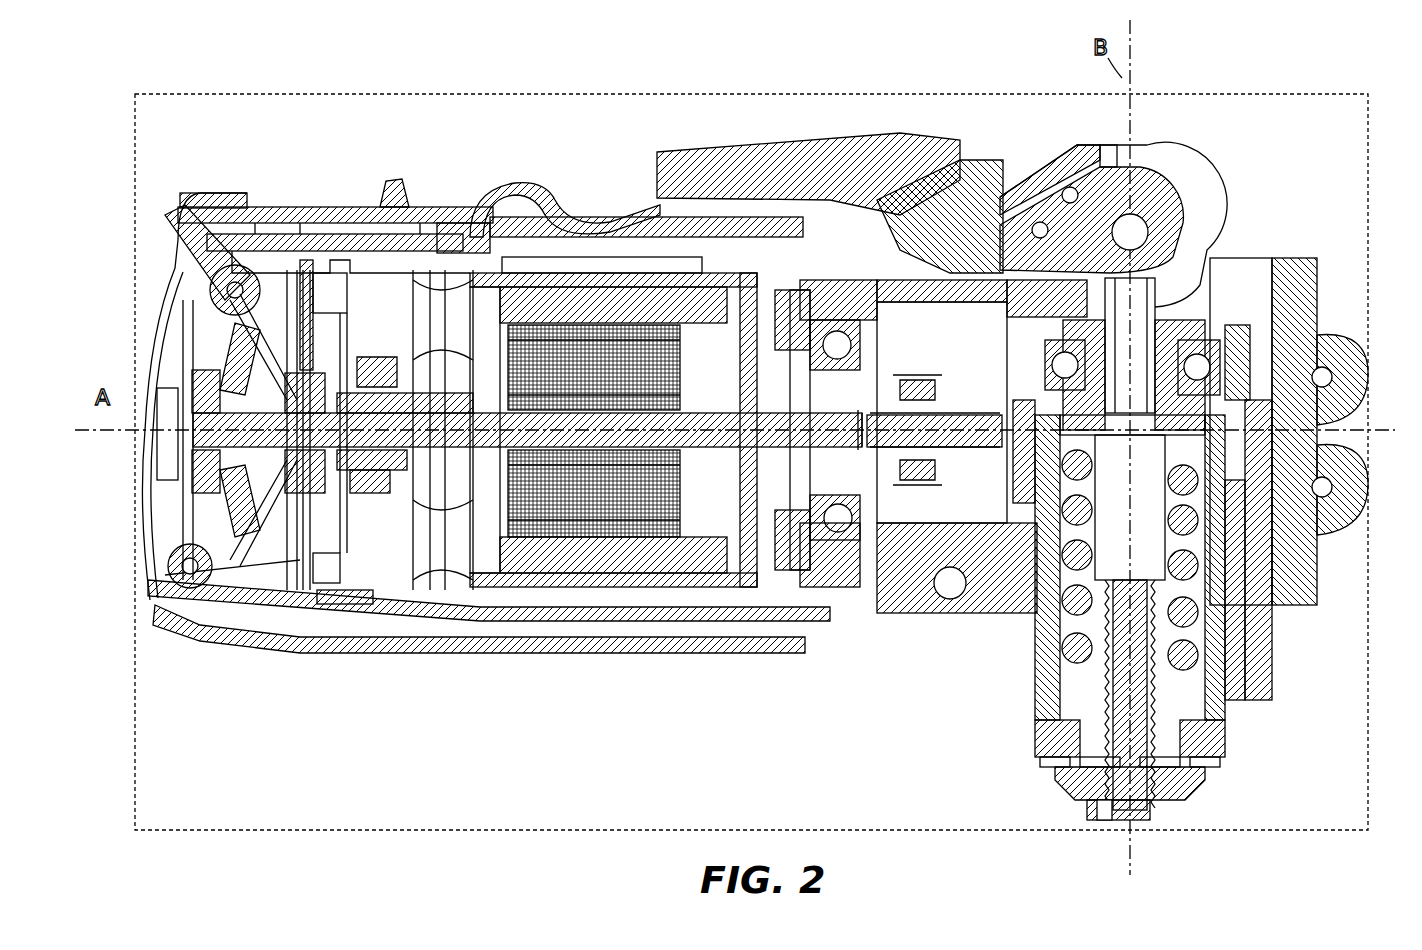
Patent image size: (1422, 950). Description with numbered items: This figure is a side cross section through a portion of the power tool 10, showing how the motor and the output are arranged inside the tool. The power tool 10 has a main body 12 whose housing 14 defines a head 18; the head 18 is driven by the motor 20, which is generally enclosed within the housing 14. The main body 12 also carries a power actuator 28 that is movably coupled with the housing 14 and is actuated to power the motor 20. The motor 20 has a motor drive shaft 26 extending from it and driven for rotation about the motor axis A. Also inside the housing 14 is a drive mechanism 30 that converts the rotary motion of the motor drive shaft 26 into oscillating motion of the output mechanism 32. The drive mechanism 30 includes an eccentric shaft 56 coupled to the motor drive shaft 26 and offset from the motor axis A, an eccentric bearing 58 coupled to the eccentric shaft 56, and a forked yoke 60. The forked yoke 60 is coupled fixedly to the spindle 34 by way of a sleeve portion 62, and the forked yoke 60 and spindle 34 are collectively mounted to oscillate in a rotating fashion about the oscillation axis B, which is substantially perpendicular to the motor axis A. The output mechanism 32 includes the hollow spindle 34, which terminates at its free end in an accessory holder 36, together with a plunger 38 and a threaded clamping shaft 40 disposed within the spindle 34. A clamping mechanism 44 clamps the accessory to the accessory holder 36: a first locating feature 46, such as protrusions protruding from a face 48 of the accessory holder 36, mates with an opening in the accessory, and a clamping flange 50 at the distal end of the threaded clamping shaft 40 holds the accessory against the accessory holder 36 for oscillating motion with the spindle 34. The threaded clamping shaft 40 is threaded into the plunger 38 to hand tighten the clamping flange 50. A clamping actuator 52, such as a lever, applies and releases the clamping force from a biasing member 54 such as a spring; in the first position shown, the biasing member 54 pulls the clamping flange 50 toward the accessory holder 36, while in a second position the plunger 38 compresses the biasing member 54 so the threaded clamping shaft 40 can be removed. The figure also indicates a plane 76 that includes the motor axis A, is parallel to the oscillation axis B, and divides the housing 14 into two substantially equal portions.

The power tool 10 is at (655, 45).
The main body 12 is at (478, 660).
The housing 14 is at (345, 648).
The head 18 is at (1292, 263).
The motor 20 is at (555, 300).
The motor drive shaft 26 is at (600, 330).
The power actuator 28 is at (388, 183).
The drive mechanism 30 is at (958, 355).
The output mechanism 32 is at (1228, 300).
The spindle 34 is at (1210, 595).
The accessory holder 36 is at (1215, 763).
The plunger 38 is at (1140, 308).
The threaded clamping shaft 40 is at (1040, 690).
The clamping mechanism 44 is at (1200, 805).
The first locating feature 46 is at (1055, 790).
The face 48 is at (1040, 768).
The clamping flange 50 is at (1100, 805).
The clamping actuator 52 is at (930, 228).
The biasing member 54 is at (1100, 625).
The eccentric shaft 56 is at (840, 530).
The eccentric bearing 58 is at (920, 378).
The forked yoke 60 is at (1010, 455).
The sleeve portion 62 is at (1255, 455).
The plane 76 is at (283, 94).